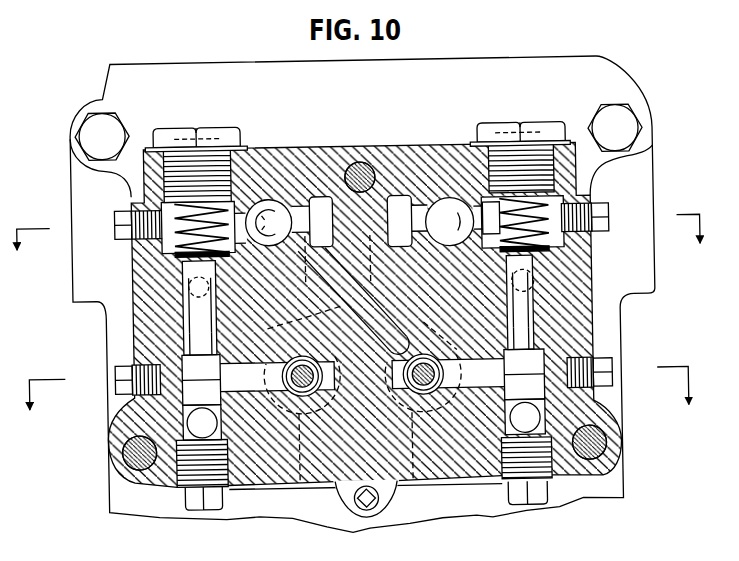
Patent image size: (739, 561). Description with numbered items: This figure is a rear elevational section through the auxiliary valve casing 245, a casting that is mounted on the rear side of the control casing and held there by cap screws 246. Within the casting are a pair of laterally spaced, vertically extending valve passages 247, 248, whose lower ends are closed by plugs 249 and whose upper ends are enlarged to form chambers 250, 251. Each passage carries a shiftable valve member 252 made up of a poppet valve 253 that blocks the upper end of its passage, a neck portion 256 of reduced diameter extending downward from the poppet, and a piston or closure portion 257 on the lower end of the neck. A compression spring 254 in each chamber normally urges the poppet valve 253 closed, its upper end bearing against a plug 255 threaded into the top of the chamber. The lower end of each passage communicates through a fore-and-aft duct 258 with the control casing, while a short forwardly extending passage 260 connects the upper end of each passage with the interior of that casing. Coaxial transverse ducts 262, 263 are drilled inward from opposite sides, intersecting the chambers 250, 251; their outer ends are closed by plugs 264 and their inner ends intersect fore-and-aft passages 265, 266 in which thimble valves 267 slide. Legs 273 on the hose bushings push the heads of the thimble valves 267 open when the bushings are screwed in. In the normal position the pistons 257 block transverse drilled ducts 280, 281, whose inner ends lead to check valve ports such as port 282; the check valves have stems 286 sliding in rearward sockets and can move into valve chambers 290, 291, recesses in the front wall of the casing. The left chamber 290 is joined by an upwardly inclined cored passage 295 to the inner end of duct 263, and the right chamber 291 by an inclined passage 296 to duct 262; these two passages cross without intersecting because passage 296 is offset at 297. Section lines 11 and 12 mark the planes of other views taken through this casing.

The auxiliary valve casing 245 is at (405, 144).
The cap screws 246 is at (371, 163).
The valve passage 247 is at (181, 285).
The valve passage 248 is at (536, 300).
The plugs 249 is at (190, 501).
The chamber 250 is at (134, 197).
The chamber 251 is at (590, 192).
The shiftable valve member 252 is at (190, 333).
The poppet valve 253 is at (176, 247).
The compression spring 254 is at (243, 196).
The plugs 255 is at (173, 126).
The neck portion 256 is at (197, 312).
The piston or closure portion 257 is at (184, 375).
The duct 258 is at (191, 434).
The passage 260 is at (187, 267).
The transverse duct 262 is at (271, 205).
The transverse duct 263 is at (471, 201).
The plugs 264 is at (116, 218).
The passage 265 is at (277, 203).
The passage 266 is at (448, 199).
The thimble valve 267 is at (292, 203).
The legs 273 is at (297, 231).
The transverse drilled duct 280 is at (201, 411).
The transverse drilled duct 281 is at (524, 405).
The check valve port 282 is at (121, 385).
The stems 286 is at (448, 374).
The valve chamber 290 is at (303, 435).
The valve chamber 291 is at (424, 433).
The inclined cored passage 295 is at (328, 302).
The inclined passage 296 is at (330, 285).
The offset 297 is at (410, 326).
The section line 11- 11 is at (368, 247).
The section line 12- 12 is at (368, 400).